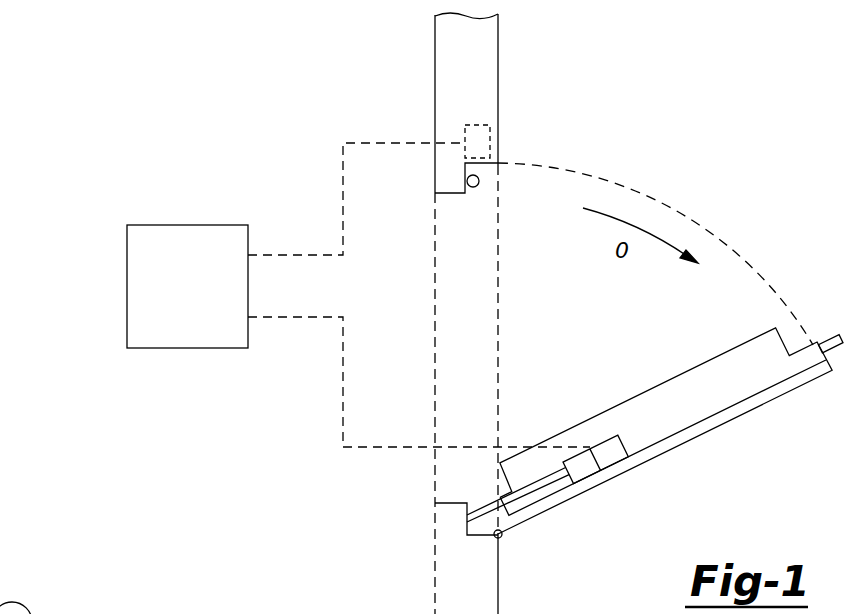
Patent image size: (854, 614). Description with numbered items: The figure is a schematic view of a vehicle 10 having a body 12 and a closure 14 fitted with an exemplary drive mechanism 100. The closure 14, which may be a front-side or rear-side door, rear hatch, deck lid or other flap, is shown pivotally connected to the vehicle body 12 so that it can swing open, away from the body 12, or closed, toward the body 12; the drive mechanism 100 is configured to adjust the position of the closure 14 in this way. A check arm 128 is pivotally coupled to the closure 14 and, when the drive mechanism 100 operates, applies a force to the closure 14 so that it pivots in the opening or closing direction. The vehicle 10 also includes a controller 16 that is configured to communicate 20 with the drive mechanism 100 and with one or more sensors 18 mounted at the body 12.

The vehicle 10 is at (385, 93).
The body 12 is at (498, 35).
The closure 14 is at (735, 418).
The controller 16 is at (127, 288).
The sensors 18 is at (478, 124).
The communicate 20 is at (298, 318).
The drive mechanism 100 is at (608, 468).
The check arm 128 is at (462, 523).